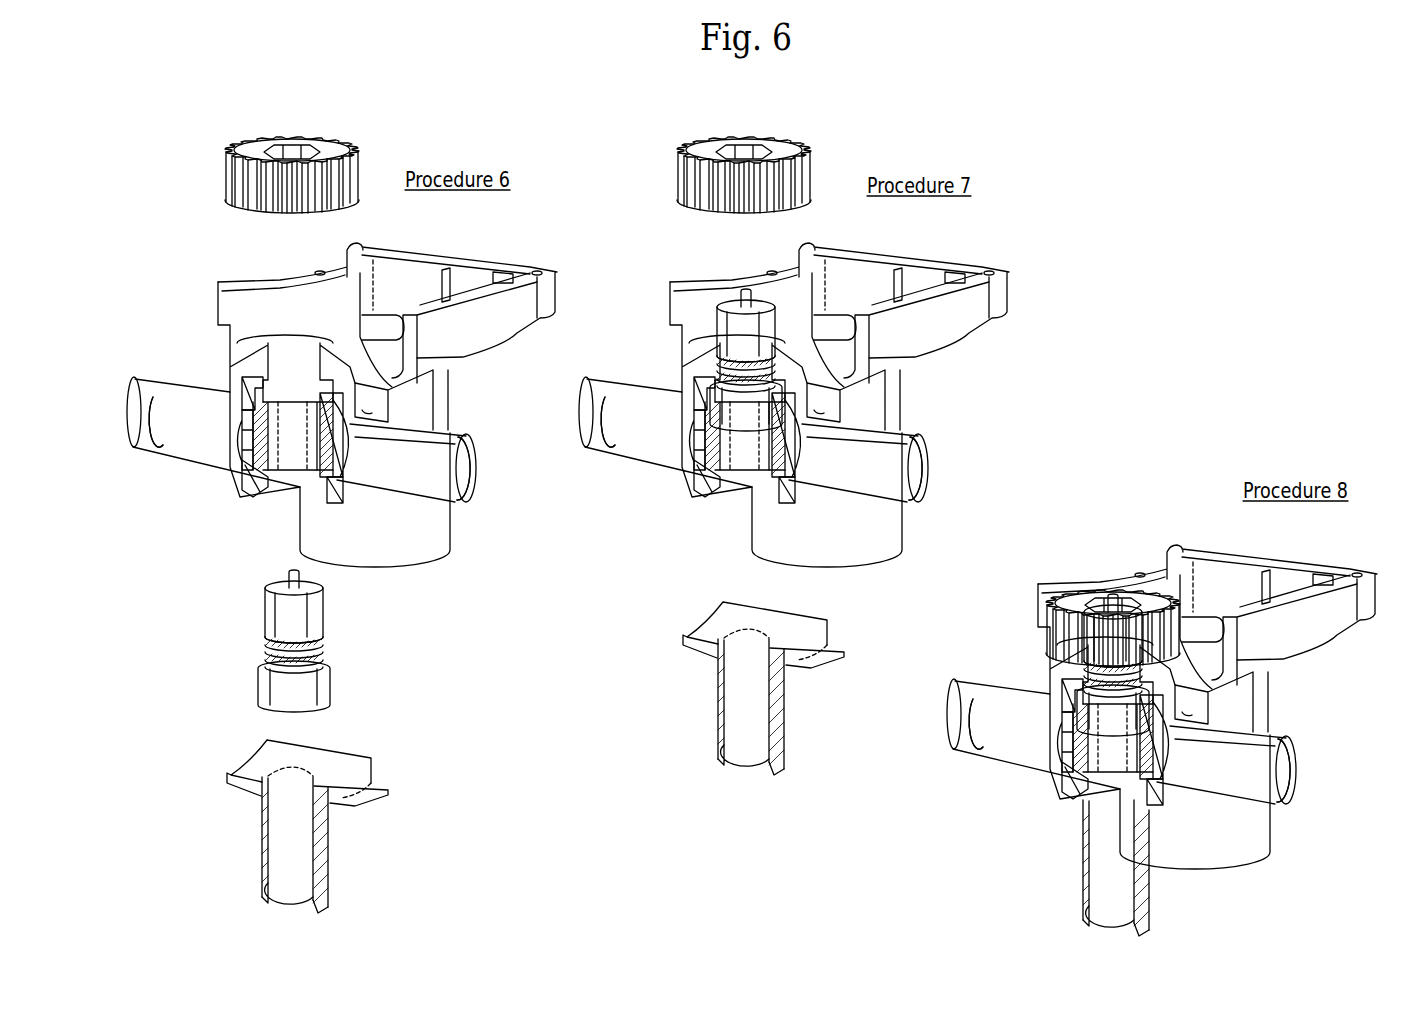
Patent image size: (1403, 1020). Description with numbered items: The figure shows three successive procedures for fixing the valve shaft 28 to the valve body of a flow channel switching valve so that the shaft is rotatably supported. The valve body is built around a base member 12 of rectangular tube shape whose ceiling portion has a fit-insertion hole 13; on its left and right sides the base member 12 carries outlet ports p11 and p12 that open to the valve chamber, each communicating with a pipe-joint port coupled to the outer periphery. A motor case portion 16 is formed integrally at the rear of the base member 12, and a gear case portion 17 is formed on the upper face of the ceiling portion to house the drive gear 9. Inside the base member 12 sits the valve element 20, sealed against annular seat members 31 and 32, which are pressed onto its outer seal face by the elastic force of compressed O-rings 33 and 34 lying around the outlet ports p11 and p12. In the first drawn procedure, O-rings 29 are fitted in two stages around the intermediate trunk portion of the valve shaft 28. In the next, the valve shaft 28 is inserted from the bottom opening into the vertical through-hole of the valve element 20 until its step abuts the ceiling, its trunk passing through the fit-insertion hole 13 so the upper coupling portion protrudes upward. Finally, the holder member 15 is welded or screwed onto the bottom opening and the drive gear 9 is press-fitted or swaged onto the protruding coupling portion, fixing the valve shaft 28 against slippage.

The drive gear 9 is at (252, 147).
The base member 12 is at (213, 341).
The fit-insertion hole 13 is at (282, 337).
The holder member 15 is at (243, 788).
The motor case portion 16 is at (453, 527).
The gear case portion 17 is at (463, 255).
The valve element 20 is at (243, 435).
The valve shaft 28 is at (339, 686).
The O-rings 29 is at (263, 660).
The seat member 31 is at (253, 487).
The seat member 32 is at (327, 500).
The O-ring 33 is at (253, 473).
The O-ring 34 is at (347, 507).
The outlet port p11 is at (207, 387).
The outlet port p12 is at (405, 422).